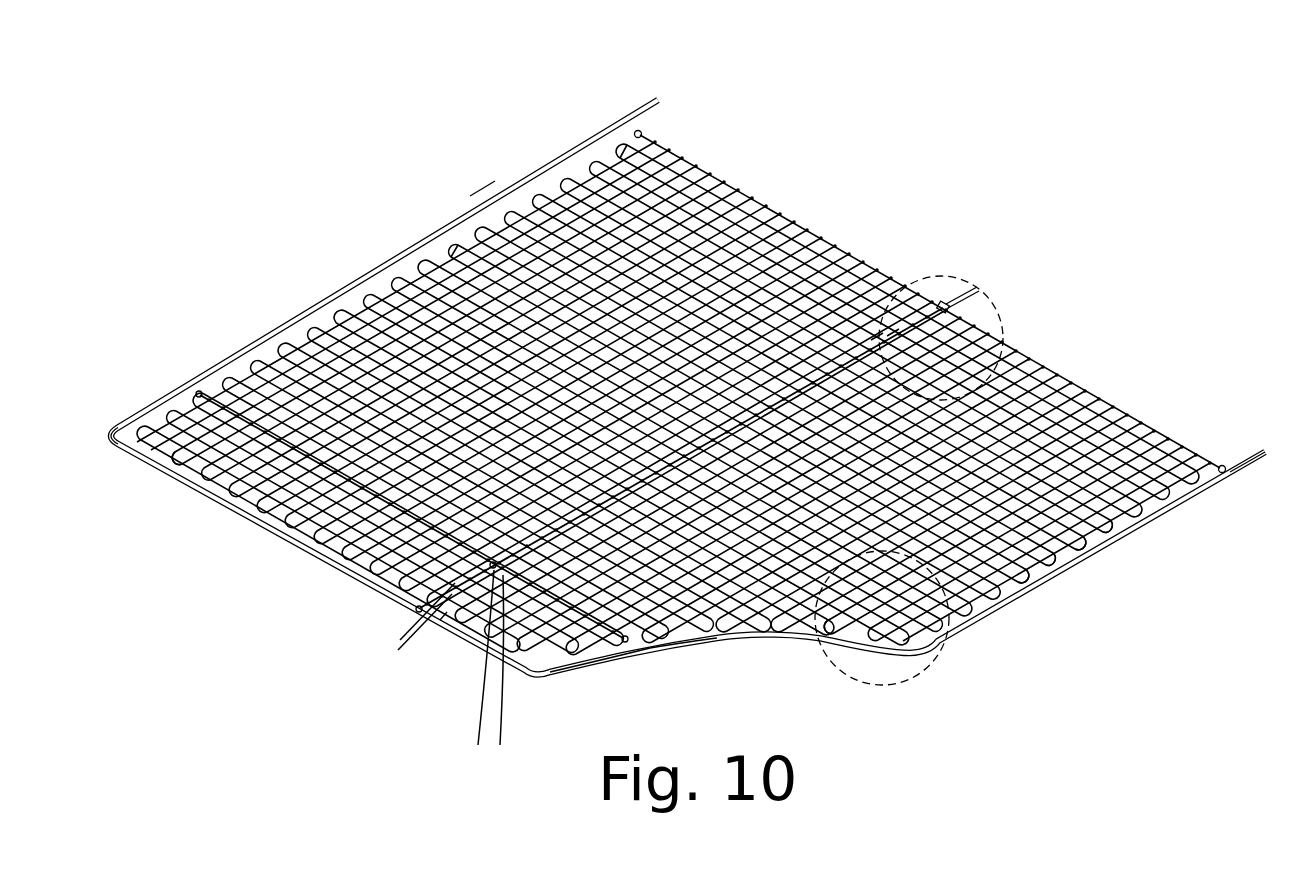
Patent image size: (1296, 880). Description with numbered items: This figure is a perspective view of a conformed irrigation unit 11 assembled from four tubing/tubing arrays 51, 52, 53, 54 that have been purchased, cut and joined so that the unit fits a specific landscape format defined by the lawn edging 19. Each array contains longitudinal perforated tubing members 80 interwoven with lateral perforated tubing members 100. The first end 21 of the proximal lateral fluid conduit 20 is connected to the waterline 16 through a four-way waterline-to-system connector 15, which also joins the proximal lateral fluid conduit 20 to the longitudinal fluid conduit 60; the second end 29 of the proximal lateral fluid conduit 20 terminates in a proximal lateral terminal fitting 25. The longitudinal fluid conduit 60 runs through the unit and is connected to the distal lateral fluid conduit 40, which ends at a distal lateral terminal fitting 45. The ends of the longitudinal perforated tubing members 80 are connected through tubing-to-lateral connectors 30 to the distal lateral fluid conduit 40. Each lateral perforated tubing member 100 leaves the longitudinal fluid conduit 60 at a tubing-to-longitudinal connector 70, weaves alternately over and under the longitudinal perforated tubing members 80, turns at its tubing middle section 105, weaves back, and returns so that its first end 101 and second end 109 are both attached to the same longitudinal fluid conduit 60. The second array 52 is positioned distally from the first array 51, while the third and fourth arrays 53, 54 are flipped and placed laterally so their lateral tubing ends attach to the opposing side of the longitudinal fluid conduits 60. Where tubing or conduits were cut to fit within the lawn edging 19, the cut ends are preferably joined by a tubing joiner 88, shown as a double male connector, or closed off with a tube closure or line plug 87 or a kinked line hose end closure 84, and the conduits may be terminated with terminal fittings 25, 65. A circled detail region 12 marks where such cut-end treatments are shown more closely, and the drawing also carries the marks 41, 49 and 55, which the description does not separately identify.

The conformed irrigation unit 11 is at (935, 660).
The connection detail region 12 is at (1003, 337).
The waterline-to-system connector 15 is at (990, 288).
The waterline 16 is at (975, 292).
The lawn edging 19 is at (483, 204).
The proximal lateral fluid conduit 20 is at (775, 212).
The first end 21 is at (962, 296).
The proximal lateral terminal fitting 25 is at (1240, 472).
The second end 29 is at (648, 133).
The tubing-to-lateral connectors 30 is at (290, 395).
The distal lateral fluid conduit 40 is at (298, 455).
The connector tube 41 is at (440, 597).
The distal lateral terminal fitting 45 is at (197, 392).
The tube loop 49 is at (188, 405).
The first tubing/tubing array 51 is at (688, 630).
The second tubing/tubing array 52 is at (578, 660).
The third tubing/tubing array 53 is at (135, 433).
The fourth tubing/tubing array 54 is at (606, 158).
The tube segment 55 is at (440, 620).
The longitudinal fluid conduit 60 is at (905, 330).
The terminal fitting 65 is at (415, 612).
The tubing-to-longitudinal connector 70 is at (877, 340).
The longitudinal perforated tubing members 80 is at (395, 292).
The kinked line hose end closure 84 is at (845, 642).
The tube closure or line plug 87 is at (298, 547).
The tubing joiner 88 is at (495, 578).
The lateral perforated tubing members 100 is at (1115, 530).
The first end 101 is at (1062, 540).
The tubing middle section 105 is at (452, 262).
The second end 109 is at (1030, 582).